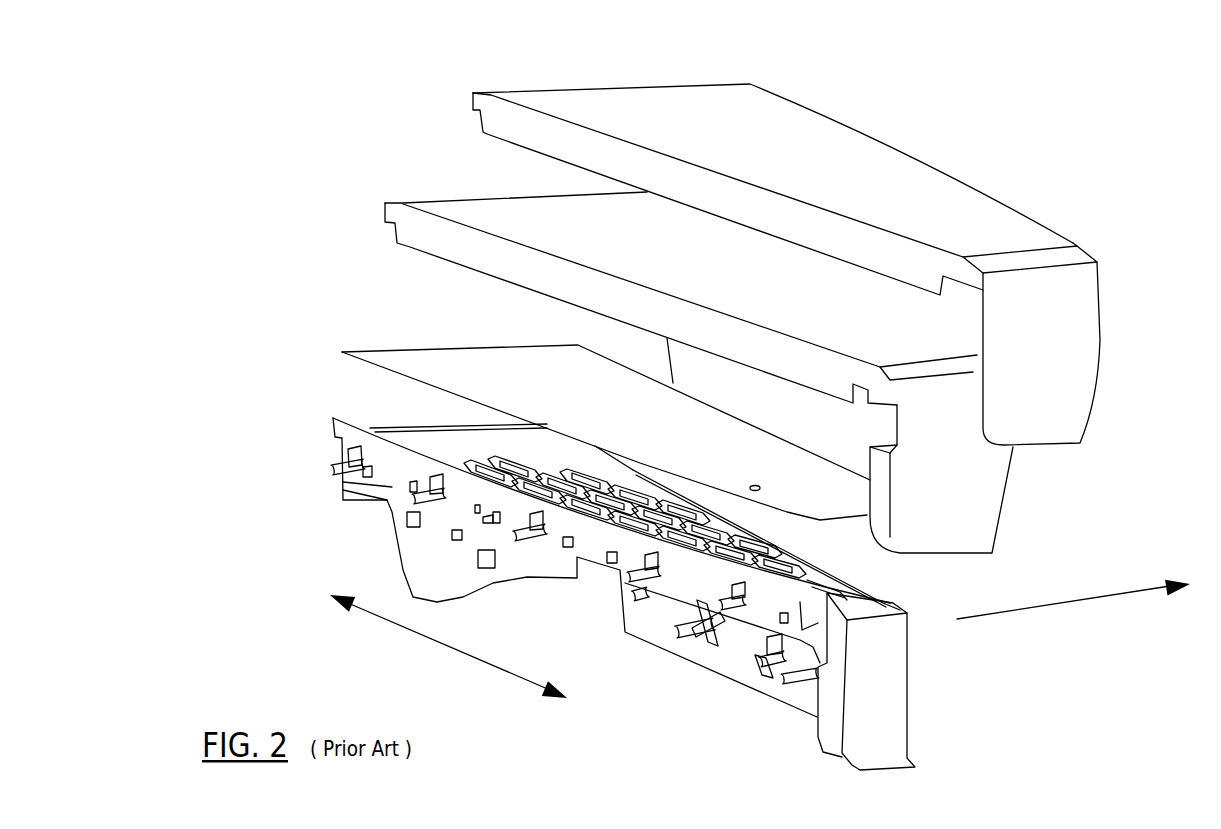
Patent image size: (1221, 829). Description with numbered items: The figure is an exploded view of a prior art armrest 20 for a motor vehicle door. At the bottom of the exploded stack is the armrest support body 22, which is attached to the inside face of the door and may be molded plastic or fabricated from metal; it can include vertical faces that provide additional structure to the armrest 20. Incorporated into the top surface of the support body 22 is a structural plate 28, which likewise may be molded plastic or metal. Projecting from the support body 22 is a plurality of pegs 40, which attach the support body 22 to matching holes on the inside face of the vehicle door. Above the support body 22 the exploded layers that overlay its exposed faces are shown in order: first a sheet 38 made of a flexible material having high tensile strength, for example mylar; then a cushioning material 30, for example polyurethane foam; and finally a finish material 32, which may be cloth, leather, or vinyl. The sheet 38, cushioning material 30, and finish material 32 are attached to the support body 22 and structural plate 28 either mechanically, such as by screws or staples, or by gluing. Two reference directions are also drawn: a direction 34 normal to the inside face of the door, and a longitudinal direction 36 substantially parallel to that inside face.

The armrest 20 is at (412, 130).
The armrest support body 22 is at (877, 672).
The structural plate 28 is at (813, 566).
The cushioning material 30 is at (983, 480).
The finish material 32 is at (923, 168).
The direction 34 is at (1077, 602).
The longitudinal direction 36 is at (438, 647).
The sheet 38 is at (430, 360).
The pegs 40 is at (690, 637).